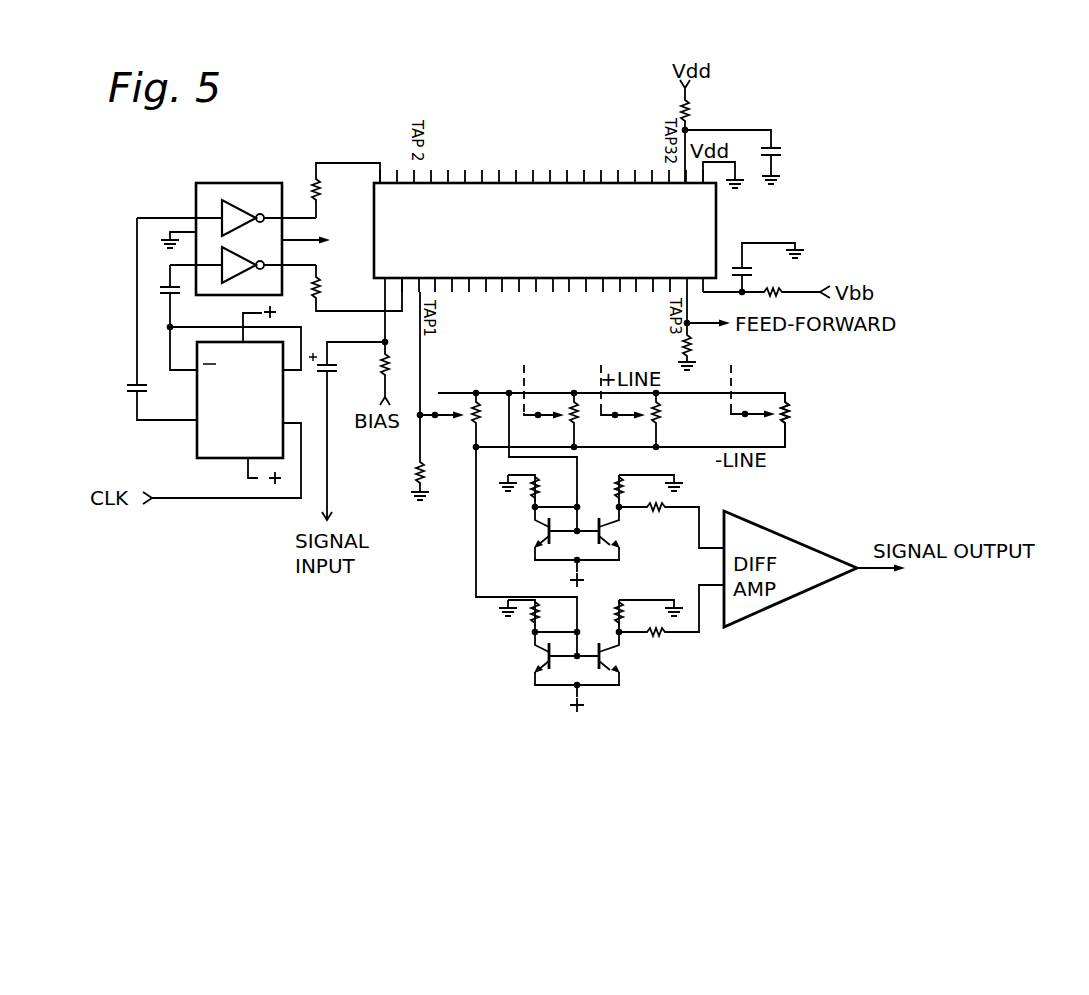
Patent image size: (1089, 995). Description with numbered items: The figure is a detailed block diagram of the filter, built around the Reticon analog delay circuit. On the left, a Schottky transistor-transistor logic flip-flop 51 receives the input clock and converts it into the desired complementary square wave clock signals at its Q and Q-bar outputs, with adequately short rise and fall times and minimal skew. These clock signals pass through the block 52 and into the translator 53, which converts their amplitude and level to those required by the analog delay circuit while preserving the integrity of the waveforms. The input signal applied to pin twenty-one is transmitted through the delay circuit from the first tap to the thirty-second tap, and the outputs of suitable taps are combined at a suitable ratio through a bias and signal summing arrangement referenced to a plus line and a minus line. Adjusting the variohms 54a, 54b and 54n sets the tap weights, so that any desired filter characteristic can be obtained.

The Schottky transistor-transistor logic flip-flop 51 is at (205, 448).
The dual inverter clock driver 52 is at (258, 183).
The 0026 translator 53 is at (518, 210).
The variohm 54a is at (595, 420).
The variohm 54b is at (681, 420).
The variohm 54n is at (807, 420).